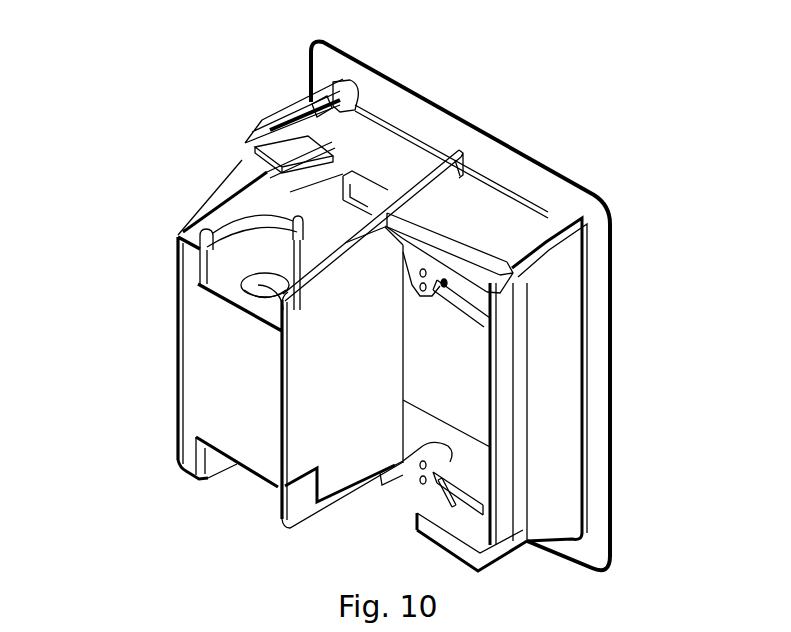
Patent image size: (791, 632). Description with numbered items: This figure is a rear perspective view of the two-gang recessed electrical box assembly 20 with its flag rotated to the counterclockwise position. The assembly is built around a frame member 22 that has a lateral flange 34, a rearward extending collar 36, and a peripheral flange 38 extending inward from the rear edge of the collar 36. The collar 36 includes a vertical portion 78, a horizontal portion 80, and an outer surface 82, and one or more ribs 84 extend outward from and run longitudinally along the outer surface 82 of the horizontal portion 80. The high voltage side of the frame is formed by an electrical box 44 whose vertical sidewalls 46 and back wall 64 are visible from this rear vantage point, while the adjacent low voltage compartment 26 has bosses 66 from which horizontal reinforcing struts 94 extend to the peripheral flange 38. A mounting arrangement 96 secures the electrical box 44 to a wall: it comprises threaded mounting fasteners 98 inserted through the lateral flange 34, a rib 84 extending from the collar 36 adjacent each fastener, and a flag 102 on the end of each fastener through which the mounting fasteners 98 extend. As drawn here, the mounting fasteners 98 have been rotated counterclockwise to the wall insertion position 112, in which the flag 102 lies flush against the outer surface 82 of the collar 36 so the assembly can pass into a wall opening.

The two-gang recessed electrical box assembly 20 is at (141, 337).
The frame member 22 is at (608, 202).
The low voltage compartment 26 is at (462, 375).
The lateral flange 34 is at (428, 129).
The collar 36 is at (520, 230).
The peripheral flange 38 is at (497, 376).
The electrical box 44 is at (215, 412).
The vertical sidewalls 46 is at (360, 378).
The back wall 64 is at (247, 386).
The bosses 66 is at (421, 482).
The vertical portion 78 is at (565, 297).
The horizontal portion 80 is at (468, 190).
The outer surface 82 is at (497, 231).
The ribs 84 is at (300, 97).
The horizontal reinforcing struts 94 is at (497, 477).
The mounting arrangement 96 is at (314, 68).
The threaded mounting fasteners 98 is at (326, 125).
The flag 102 is at (247, 167).
The wall insertion position 112 is at (236, 124).